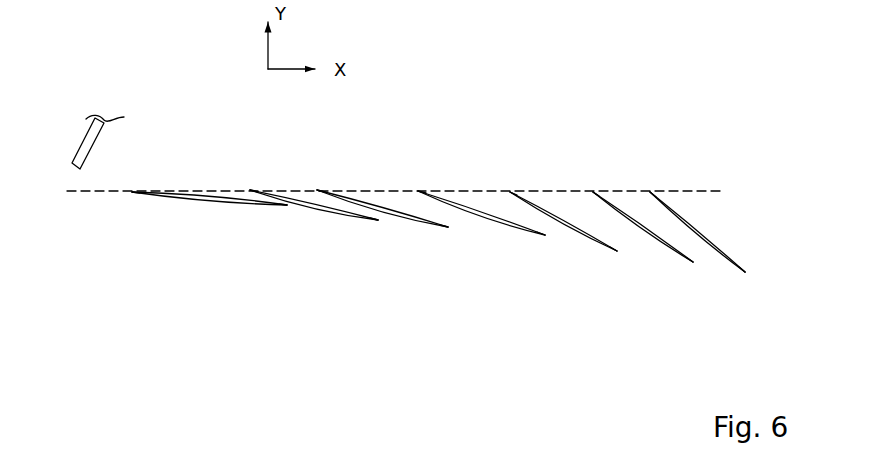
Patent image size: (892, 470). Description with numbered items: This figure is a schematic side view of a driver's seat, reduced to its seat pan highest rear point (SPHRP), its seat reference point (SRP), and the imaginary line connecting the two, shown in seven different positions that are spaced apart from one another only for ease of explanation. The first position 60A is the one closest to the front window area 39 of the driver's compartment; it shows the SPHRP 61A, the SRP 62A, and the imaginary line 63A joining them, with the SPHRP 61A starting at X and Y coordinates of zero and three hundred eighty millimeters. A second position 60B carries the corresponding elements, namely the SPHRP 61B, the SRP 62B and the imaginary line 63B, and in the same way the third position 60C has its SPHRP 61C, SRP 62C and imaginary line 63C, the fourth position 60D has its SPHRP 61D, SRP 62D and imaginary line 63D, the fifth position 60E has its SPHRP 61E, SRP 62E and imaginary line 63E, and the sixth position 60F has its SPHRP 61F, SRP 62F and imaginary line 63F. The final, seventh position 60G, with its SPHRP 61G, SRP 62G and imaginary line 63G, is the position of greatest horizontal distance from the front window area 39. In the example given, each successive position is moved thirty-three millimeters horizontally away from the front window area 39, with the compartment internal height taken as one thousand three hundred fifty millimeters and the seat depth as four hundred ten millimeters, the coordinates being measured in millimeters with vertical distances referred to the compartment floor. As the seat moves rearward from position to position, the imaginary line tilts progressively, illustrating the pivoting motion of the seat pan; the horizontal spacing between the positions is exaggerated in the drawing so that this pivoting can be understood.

The front window area 39 is at (101, 134).
The first position 60A is at (162, 244).
The SPHRP 61A is at (129, 194).
The SRP 62A is at (285, 208).
The imaginary line 63A is at (187, 200).
The second position 60B is at (304, 227).
The SPHRP 61B is at (252, 190).
The SRP 62B is at (378, 221).
The imaginary line 63B is at (307, 206).
The third position 60C is at (382, 253).
The SPHRP 61C is at (318, 190).
The SRP 62C is at (446, 229).
The imaginary line 63C is at (395, 215).
The fourth position 60D is at (481, 248).
The SPHRP 61D is at (420, 190).
The SRP 62D is at (544, 237).
The imaginary line 63D is at (489, 219).
The fifth position 60E is at (563, 245).
The SPHRP 61E is at (512, 190).
The SRP 62E is at (614, 249).
The imaginary line 63E is at (563, 225).
The sixth position 60F is at (673, 242).
The SPHRP 61F is at (594, 190).
The SRP 62F is at (696, 259).
The imaginary line 63F is at (640, 230).
The seventh position 60G is at (735, 258).
The SPHRP 61G is at (652, 190).
The SRP 62G is at (750, 267).
The imaginary line 63G is at (715, 251).